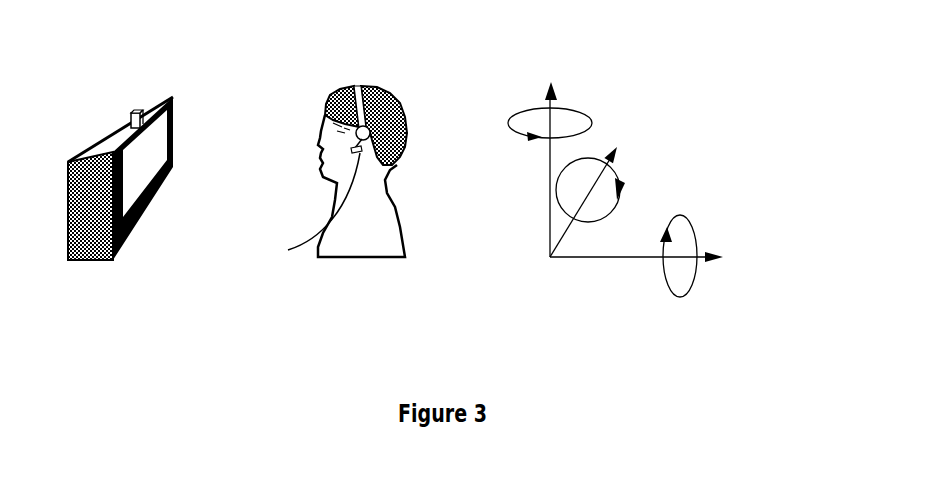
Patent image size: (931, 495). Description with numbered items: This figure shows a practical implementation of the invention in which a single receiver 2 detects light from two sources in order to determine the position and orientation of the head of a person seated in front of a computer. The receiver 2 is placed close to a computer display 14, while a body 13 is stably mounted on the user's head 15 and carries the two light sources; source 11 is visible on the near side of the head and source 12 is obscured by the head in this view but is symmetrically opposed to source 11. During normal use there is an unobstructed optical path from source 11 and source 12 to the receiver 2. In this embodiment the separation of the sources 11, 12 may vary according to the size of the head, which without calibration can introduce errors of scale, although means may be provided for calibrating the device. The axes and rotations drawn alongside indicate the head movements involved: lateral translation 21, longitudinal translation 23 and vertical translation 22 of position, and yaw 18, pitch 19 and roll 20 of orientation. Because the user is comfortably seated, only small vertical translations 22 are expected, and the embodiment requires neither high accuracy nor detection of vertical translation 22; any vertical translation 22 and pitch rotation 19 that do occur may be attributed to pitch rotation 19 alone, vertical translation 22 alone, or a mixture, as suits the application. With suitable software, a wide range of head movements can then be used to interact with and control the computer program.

The receiver 2 is at (132, 118).
The source 11 is at (353, 150).
The source 12 is at (330, 118).
The body 13 is at (365, 115).
The computer display 14 is at (135, 172).
The user's head 15 is at (343, 103).
The yaw 18 is at (537, 138).
The pitch 19 is at (622, 185).
The roll 20 is at (668, 230).
The lateral translation 21 is at (617, 148).
The vertical translation 22 is at (553, 85).
The longitudinal translation 23 is at (723, 257).